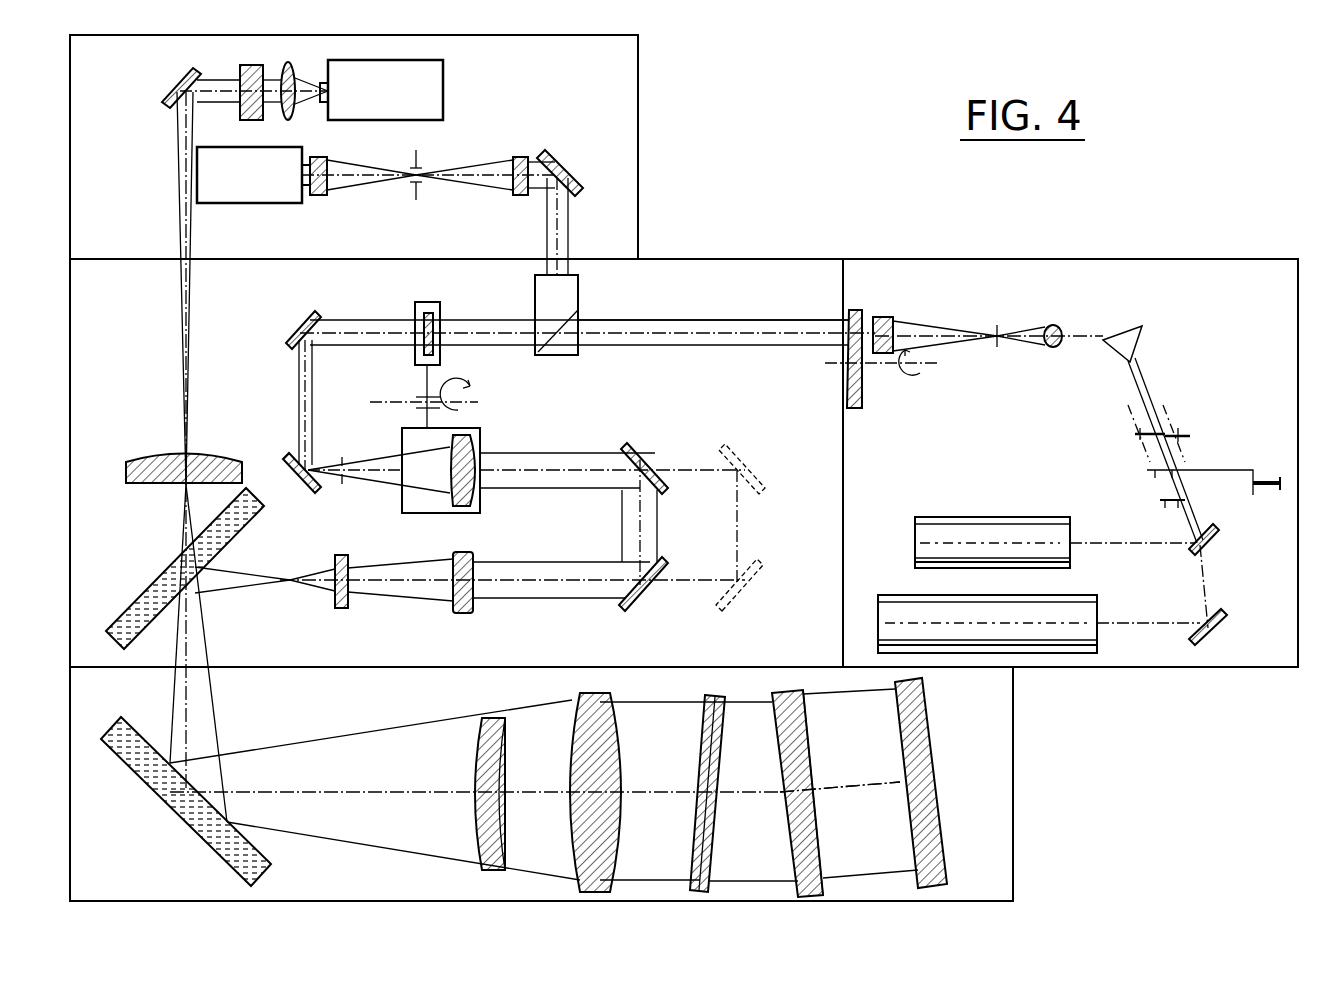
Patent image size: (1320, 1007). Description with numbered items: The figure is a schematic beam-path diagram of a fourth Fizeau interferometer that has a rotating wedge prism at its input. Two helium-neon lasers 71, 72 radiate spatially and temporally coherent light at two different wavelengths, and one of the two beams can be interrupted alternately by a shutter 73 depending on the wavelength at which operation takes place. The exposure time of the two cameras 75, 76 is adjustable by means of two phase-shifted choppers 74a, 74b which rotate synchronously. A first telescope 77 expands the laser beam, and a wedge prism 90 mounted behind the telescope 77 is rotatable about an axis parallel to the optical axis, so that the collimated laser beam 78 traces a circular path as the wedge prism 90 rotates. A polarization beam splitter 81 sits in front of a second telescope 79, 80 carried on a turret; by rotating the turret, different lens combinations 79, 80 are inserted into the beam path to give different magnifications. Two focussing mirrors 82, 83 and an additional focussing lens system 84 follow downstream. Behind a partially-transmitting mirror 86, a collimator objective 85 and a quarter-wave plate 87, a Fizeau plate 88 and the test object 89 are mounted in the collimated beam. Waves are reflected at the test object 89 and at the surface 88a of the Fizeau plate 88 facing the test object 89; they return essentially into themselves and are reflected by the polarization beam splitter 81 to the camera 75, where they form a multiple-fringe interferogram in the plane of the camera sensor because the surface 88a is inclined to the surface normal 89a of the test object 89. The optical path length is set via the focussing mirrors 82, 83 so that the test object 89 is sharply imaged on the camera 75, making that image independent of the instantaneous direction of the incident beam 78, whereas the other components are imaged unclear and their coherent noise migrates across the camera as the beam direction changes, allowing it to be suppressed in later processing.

The helium-neon laser 71 is at (880, 595).
The helium-neon laser 72 is at (960, 517).
The shutter 73 is at (1185, 497).
The chopper 74a is at (1138, 435).
The chopper 74b is at (1190, 436).
The camera 75 is at (262, 203).
The camera 76 is at (443, 103).
The first telescope 77 is at (885, 318).
The collimated laser beam 78 is at (740, 322).
The lens combination of second telescope 79 is at (430, 302).
The lens combination of second telescope 80 is at (480, 437).
The polarization beam splitter 81 is at (578, 293).
The focussing mirror 82 is at (640, 457).
The focussing mirror 83 is at (660, 600).
The focussing lens system 84 is at (468, 612).
The collimator objective 85 is at (580, 700).
The partially-transmitting mirror 86 is at (150, 588).
The λ/4-plate 87 is at (706, 697).
The Fizeau plate 88 is at (790, 694).
The surface of Fizeau plate 88a is at (812, 768).
The test object 89 is at (925, 740).
The surface normal of test object 89a is at (878, 788).
The wedge prism 90 is at (862, 388).